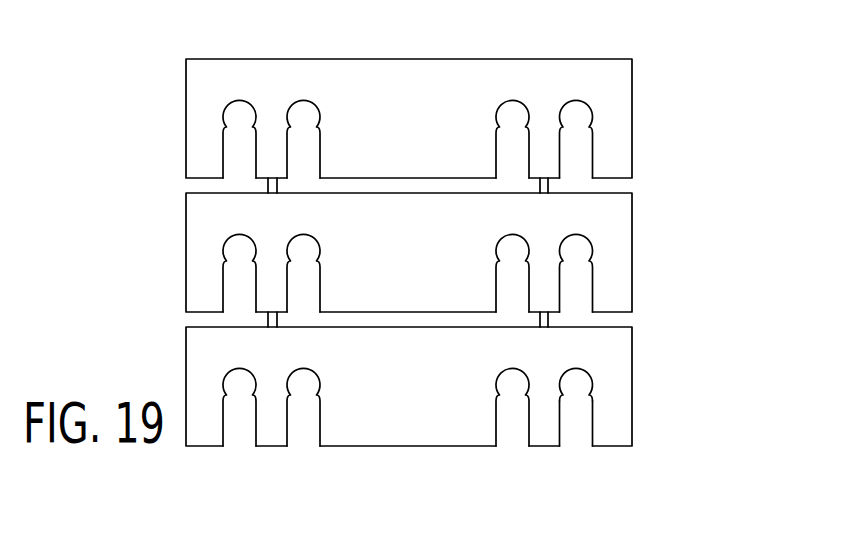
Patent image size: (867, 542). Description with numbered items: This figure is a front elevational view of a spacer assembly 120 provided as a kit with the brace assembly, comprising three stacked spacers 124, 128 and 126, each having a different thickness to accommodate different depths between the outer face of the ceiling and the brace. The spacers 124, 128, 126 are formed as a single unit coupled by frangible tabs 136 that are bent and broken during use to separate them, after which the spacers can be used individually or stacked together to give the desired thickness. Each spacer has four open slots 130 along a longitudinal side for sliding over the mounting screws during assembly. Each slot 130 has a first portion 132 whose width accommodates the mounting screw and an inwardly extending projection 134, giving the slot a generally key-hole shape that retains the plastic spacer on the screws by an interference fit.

The stacked clip assembly 120 is at (606, 50).
The spacer 124 is at (632, 114).
The spacer 128 is at (632, 246).
The spacer 126 is at (632, 407).
The open slots 130 is at (240, 159).
The first portion 132 is at (560, 433).
The inwardly extending projection 134 is at (558, 393).
The frangible tabs 136 is at (268, 187).